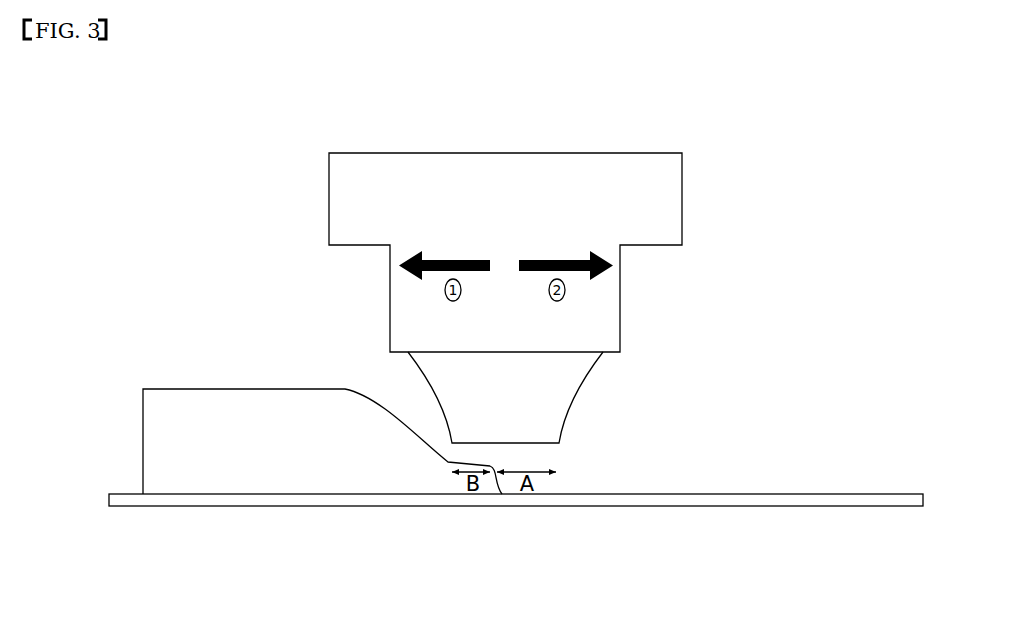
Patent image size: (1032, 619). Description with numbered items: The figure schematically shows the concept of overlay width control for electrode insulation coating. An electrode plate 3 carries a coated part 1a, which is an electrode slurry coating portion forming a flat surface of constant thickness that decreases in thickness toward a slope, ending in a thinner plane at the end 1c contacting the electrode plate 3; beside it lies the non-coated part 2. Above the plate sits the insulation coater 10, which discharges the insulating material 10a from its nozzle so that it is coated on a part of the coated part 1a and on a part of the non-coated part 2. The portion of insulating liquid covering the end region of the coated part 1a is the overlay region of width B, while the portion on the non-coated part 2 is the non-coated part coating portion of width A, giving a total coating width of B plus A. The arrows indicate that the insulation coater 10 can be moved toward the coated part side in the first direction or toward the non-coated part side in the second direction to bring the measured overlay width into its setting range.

The insulation coater 10 is at (505, 166).
The insulating material 10a is at (561, 400).
The coated part 1a is at (245, 401).
The end 1c is at (457, 484).
The non-coated part 2 is at (810, 493).
The stage 3 is at (735, 512).